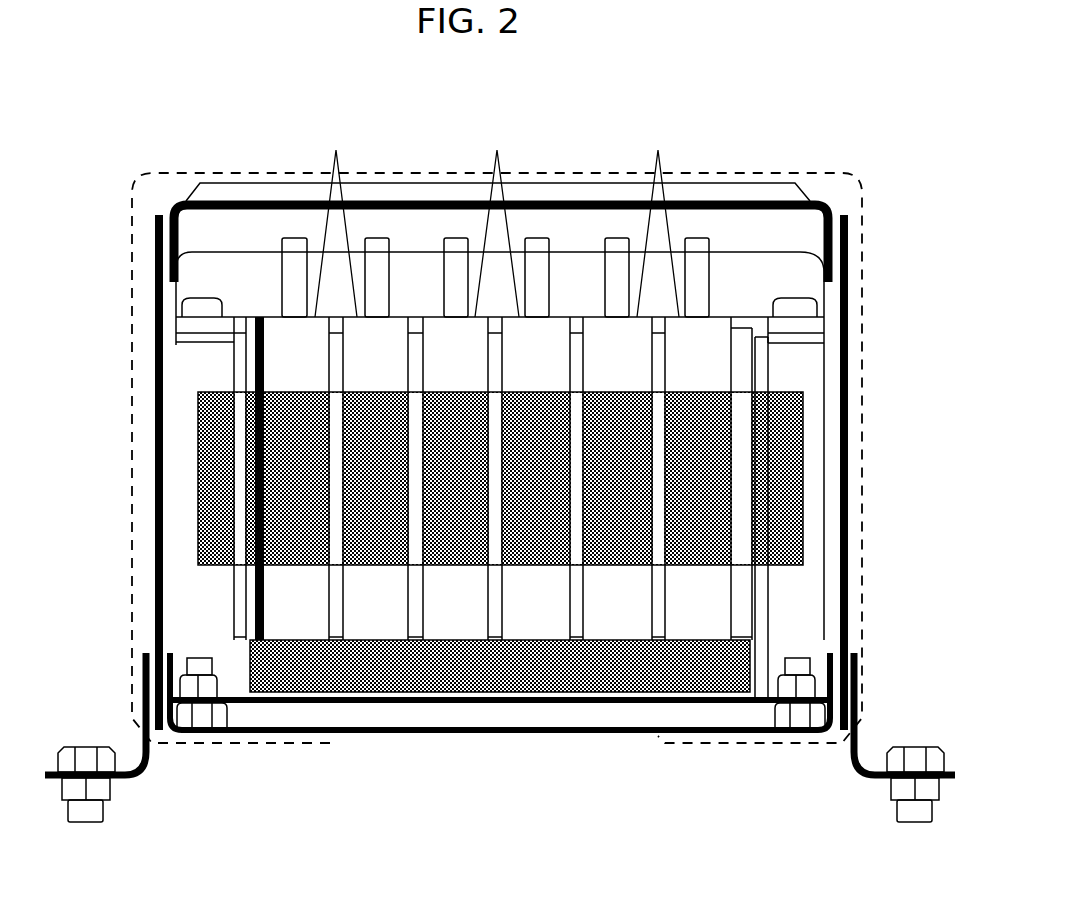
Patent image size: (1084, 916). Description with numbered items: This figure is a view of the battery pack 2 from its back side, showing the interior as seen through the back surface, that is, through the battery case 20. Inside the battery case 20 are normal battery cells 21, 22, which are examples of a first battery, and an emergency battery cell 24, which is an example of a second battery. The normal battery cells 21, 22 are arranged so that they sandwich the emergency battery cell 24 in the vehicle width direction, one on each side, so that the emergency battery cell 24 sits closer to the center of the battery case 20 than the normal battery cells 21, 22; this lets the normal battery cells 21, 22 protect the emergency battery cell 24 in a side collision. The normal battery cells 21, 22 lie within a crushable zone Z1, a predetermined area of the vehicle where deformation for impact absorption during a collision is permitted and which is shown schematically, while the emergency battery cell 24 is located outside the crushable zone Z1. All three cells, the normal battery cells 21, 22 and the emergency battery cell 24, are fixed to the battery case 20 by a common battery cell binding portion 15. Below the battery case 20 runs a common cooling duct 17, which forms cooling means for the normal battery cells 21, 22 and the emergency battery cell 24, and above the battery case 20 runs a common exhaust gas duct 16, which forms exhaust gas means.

The battery pack 2 is at (872, 142).
The battery cell binding portion 15 is at (208, 480).
The exhaust gas duct 16 is at (737, 272).
The cooling duct 17 is at (490, 673).
The battery case 20 is at (156, 584).
The normal battery cell 21 is at (336, 722).
The normal battery cell 22 is at (658, 722).
The emergency battery cell 24 is at (497, 317).
The crushable zone Z1 is at (294, 748).